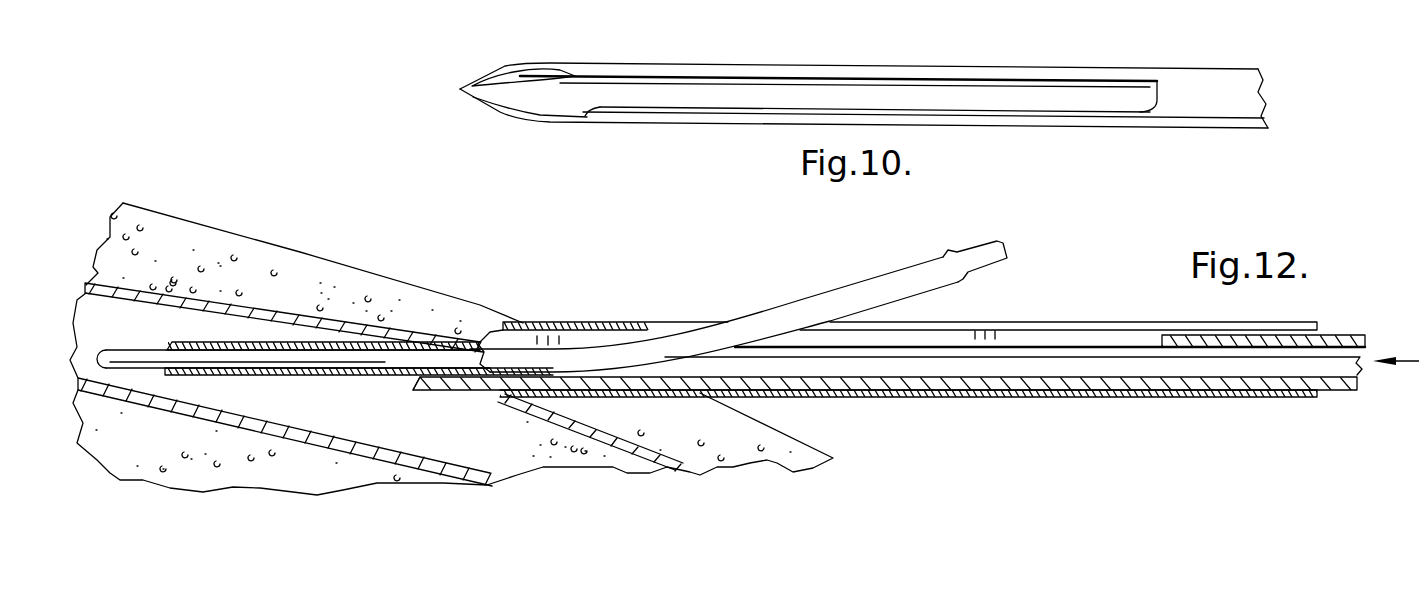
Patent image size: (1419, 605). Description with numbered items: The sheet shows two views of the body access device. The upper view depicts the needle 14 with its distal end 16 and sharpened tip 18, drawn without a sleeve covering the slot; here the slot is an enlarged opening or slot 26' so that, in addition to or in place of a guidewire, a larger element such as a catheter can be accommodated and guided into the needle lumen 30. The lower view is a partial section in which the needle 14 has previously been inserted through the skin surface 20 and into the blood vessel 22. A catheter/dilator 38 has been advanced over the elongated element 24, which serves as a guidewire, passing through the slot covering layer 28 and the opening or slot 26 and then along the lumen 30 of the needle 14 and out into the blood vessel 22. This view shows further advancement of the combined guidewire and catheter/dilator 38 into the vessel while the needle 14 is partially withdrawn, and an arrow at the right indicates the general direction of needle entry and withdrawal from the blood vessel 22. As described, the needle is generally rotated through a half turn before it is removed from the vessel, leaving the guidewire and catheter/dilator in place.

In FIG. 10, the needle 14 is at (1205, 67).
In FIG. 10, the distal end 16 is at (558, 62).
In FIG. 10, the sharpened tip 18 is at (458, 92).
In FIG. 12, the sharpened tip 18 is at (413, 385).
In FIG. 12, the skin surface 20 is at (212, 222).
In FIG. 12, the blood vessel 22 is at (247, 413).
In FIG. 12, the elongated element 24 is at (1003, 250).
In FIG. 12, the opening or slot 26 is at (934, 311).
In FIG. 10, the enlarged opening or slot 26' is at (838, 63).
In FIG. 12, the slot covering layer 28 is at (993, 397).
In FIG. 12, the needle lumen 30 is at (1208, 360).
In FIG. 12, the catheter/dilator 38 is at (443, 337).